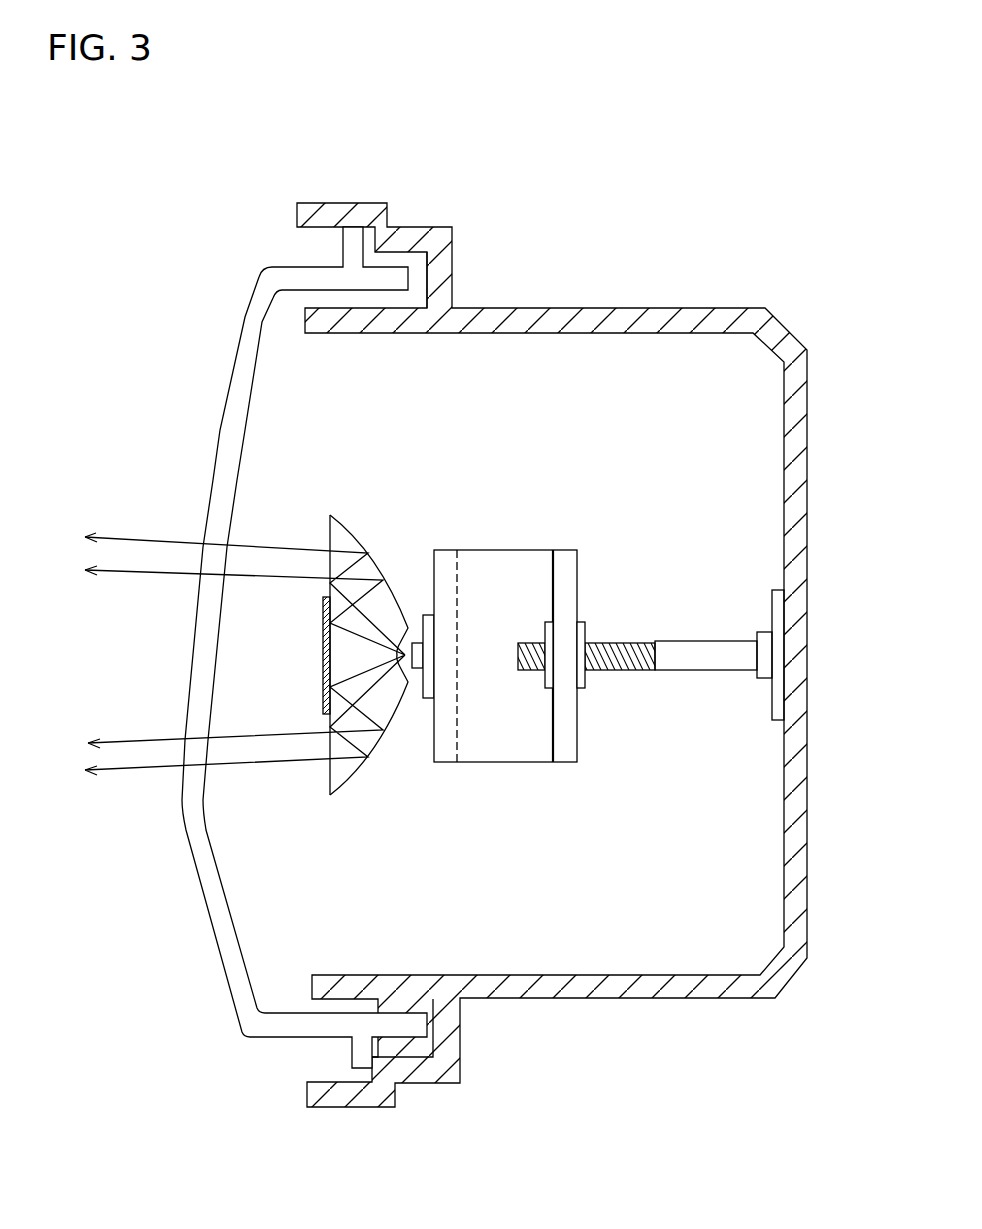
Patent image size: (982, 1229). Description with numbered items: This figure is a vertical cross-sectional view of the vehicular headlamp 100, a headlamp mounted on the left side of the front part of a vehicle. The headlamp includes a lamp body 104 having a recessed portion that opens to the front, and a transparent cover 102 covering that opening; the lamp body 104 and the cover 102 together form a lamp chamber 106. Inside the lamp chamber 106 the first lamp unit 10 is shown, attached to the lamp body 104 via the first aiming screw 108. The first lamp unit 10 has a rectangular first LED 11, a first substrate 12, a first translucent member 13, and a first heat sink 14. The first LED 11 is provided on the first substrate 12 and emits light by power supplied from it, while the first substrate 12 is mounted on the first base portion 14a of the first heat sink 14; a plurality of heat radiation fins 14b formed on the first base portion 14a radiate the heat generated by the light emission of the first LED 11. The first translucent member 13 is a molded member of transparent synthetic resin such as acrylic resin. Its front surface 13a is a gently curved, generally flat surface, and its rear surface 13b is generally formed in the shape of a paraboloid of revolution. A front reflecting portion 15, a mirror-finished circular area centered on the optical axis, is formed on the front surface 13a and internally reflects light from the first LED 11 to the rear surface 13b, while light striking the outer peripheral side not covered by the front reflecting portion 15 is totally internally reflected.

The vehicular headlamp 100 is at (206, 190).
The cover 102 is at (232, 378).
The lamp body 104 is at (629, 308).
The lamp chamber 106 is at (348, 417).
The first aiming screw 108 is at (630, 643).
The first lamp unit 10 is at (304, 509).
The first LED 11 is at (413, 672).
The first substrate 12 is at (425, 615).
The first translucent member 13 is at (362, 667).
The front surface 13a is at (330, 775).
The rear surface 13b is at (392, 602).
The first heat sink 14 is at (512, 550).
The first base portion 14a is at (434, 740).
The heat radiation fins 14b is at (538, 738).
The front reflecting portion 15 is at (322, 640).